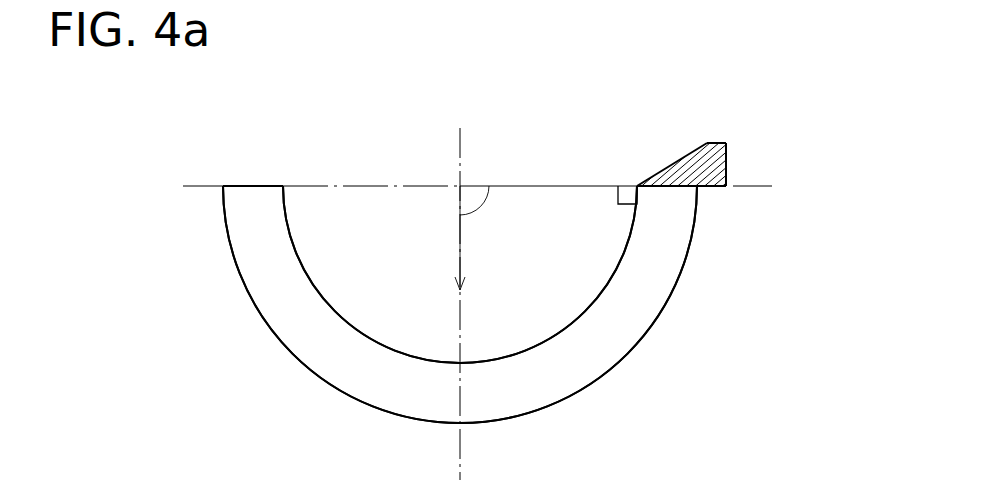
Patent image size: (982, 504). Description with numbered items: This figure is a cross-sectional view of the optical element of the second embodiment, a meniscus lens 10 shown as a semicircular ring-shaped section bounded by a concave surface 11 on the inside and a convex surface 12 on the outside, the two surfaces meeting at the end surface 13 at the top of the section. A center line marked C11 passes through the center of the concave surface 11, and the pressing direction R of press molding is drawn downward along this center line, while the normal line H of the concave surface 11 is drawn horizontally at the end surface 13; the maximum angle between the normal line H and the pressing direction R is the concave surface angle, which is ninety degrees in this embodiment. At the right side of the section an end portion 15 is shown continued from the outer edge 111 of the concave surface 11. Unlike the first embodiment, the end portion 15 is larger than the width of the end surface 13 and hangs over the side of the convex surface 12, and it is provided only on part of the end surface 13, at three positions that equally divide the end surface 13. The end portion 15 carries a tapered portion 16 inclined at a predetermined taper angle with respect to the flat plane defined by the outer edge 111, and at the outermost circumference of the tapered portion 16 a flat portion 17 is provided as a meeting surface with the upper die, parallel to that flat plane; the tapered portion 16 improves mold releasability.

The meniscus lens 10 is at (612, 347).
The concave surface 11 is at (532, 347).
The convex surface 12 is at (673, 293).
The end surface 13 is at (670, 187).
The end portion 15 is at (726, 170).
The tapered portion 16 is at (662, 178).
The flat portion 17 is at (713, 142).
The outer edge 111 is at (638, 184).
The center of inner circumferential surface C11 is at (474, 189).
The pressing direction R is at (449, 238).
The normal line H is at (542, 168).